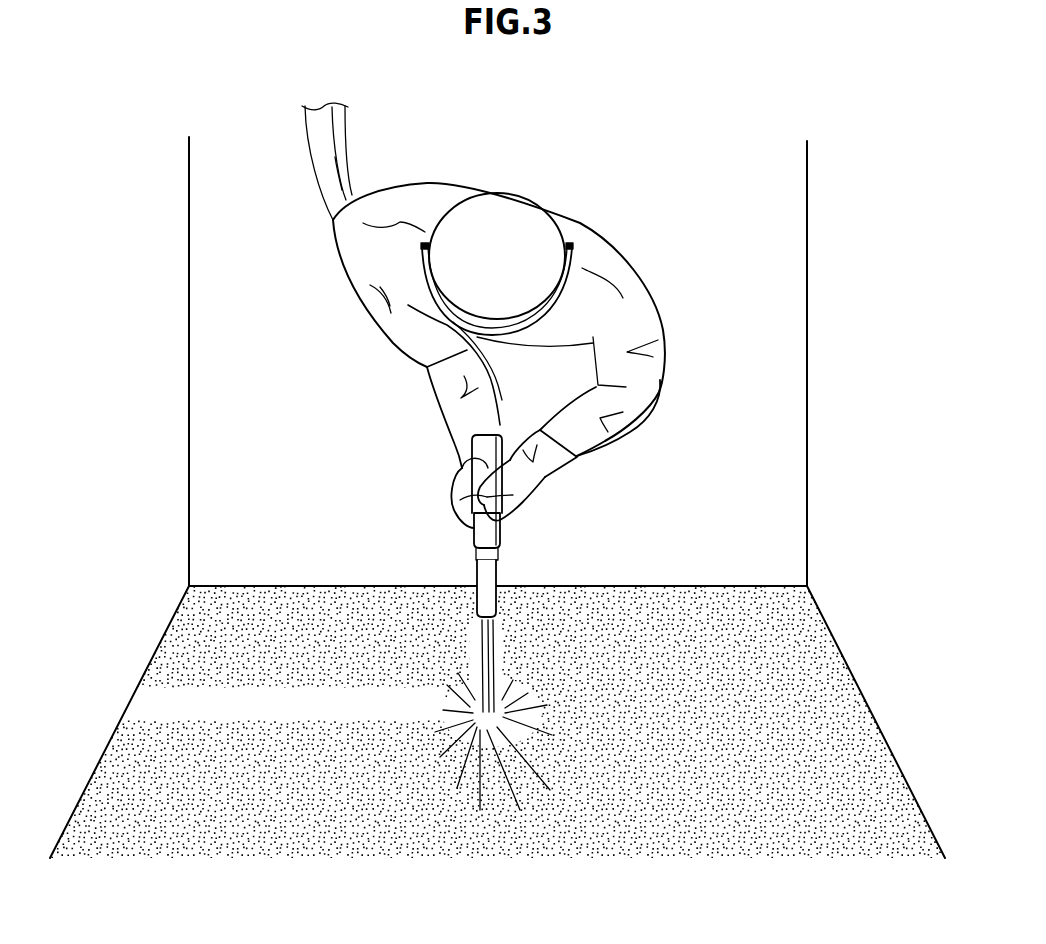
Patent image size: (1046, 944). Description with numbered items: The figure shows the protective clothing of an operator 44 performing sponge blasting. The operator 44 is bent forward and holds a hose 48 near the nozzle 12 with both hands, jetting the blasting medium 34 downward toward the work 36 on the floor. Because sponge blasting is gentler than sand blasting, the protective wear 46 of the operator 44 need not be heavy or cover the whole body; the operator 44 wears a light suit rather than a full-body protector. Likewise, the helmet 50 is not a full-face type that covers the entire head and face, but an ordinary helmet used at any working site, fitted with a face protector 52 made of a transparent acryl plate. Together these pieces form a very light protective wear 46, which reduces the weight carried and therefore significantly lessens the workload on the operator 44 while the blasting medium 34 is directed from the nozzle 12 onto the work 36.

The nozzle 12 is at (480, 577).
The blasting medium 34 is at (477, 668).
The work 36 is at (305, 703).
The operator 44 is at (450, 172).
The protective wear 46 is at (373, 268).
The hose 48 is at (470, 460).
The helmet 50 is at (521, 224).
The face protector 52 is at (538, 328).